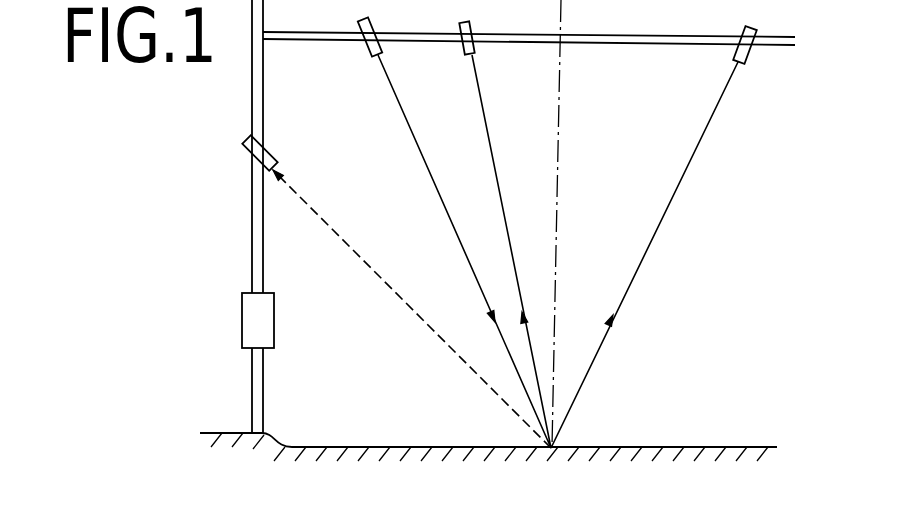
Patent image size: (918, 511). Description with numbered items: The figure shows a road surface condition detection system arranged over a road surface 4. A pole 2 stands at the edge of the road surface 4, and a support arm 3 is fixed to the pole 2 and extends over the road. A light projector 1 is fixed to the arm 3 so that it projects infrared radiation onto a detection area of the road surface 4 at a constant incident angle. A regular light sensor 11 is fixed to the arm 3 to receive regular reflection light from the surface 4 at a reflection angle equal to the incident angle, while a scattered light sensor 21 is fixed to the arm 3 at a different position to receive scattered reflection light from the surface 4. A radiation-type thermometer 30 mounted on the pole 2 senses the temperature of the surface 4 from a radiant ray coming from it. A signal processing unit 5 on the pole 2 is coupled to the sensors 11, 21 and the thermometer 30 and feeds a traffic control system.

The light projector 1 is at (367, 20).
The pole 2 is at (253, 243).
The support arm 3 is at (337, 39).
The road surface 4 is at (700, 448).
The signal processing unit 5 is at (258, 333).
The regular light sensor 11 is at (744, 52).
The scattered light sensor 21 is at (465, 44).
The radiation-type thermometer 30 is at (262, 153).